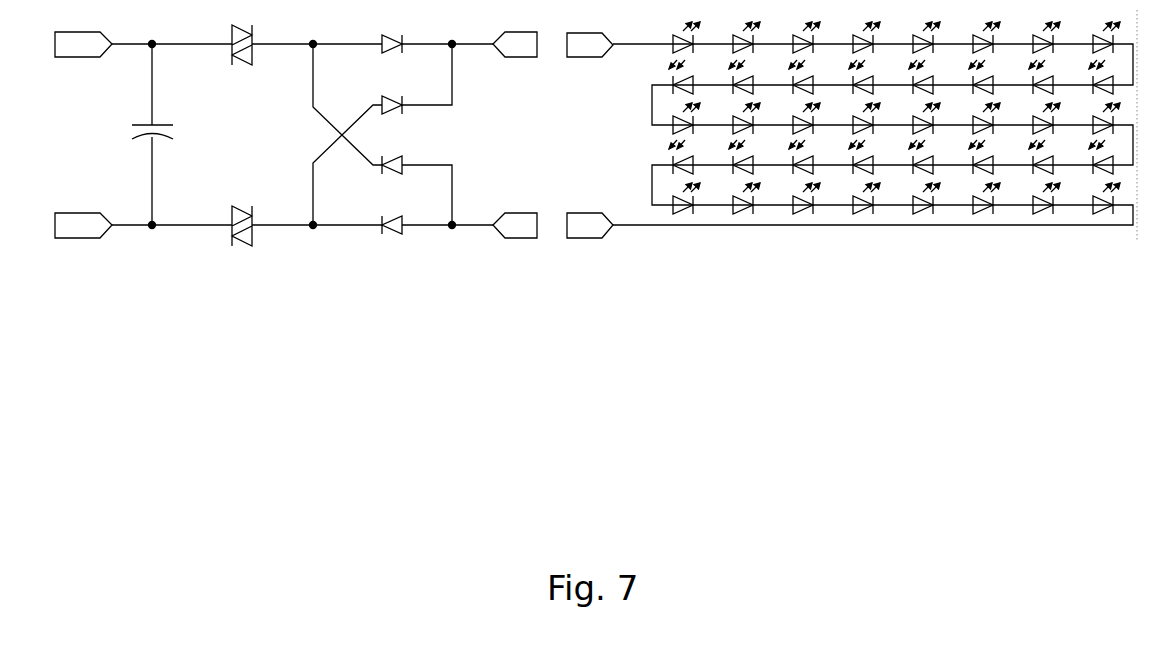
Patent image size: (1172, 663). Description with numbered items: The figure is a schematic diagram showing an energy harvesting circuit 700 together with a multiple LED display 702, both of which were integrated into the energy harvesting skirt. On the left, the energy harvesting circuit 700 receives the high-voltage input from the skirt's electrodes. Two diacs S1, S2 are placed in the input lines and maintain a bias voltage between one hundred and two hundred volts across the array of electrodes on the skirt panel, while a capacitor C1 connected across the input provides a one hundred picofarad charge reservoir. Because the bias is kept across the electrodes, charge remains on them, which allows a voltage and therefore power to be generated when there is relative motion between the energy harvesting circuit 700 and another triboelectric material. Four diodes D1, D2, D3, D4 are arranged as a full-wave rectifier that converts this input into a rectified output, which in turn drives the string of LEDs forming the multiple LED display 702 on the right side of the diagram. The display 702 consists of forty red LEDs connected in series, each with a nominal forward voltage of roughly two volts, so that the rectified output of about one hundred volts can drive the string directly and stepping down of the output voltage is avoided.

The energy harvesting circuit 700 is at (543, 268).
The multiple LED display 702 is at (1143, 268).
The diac S1 is at (213, 45).
The diac S2 is at (213, 226).
The capacitor C1 is at (186, 120).
The diode D1 is at (410, 38).
The diode D2 is at (410, 98).
The diode D3 is at (410, 159).
The diode D4 is at (410, 219).